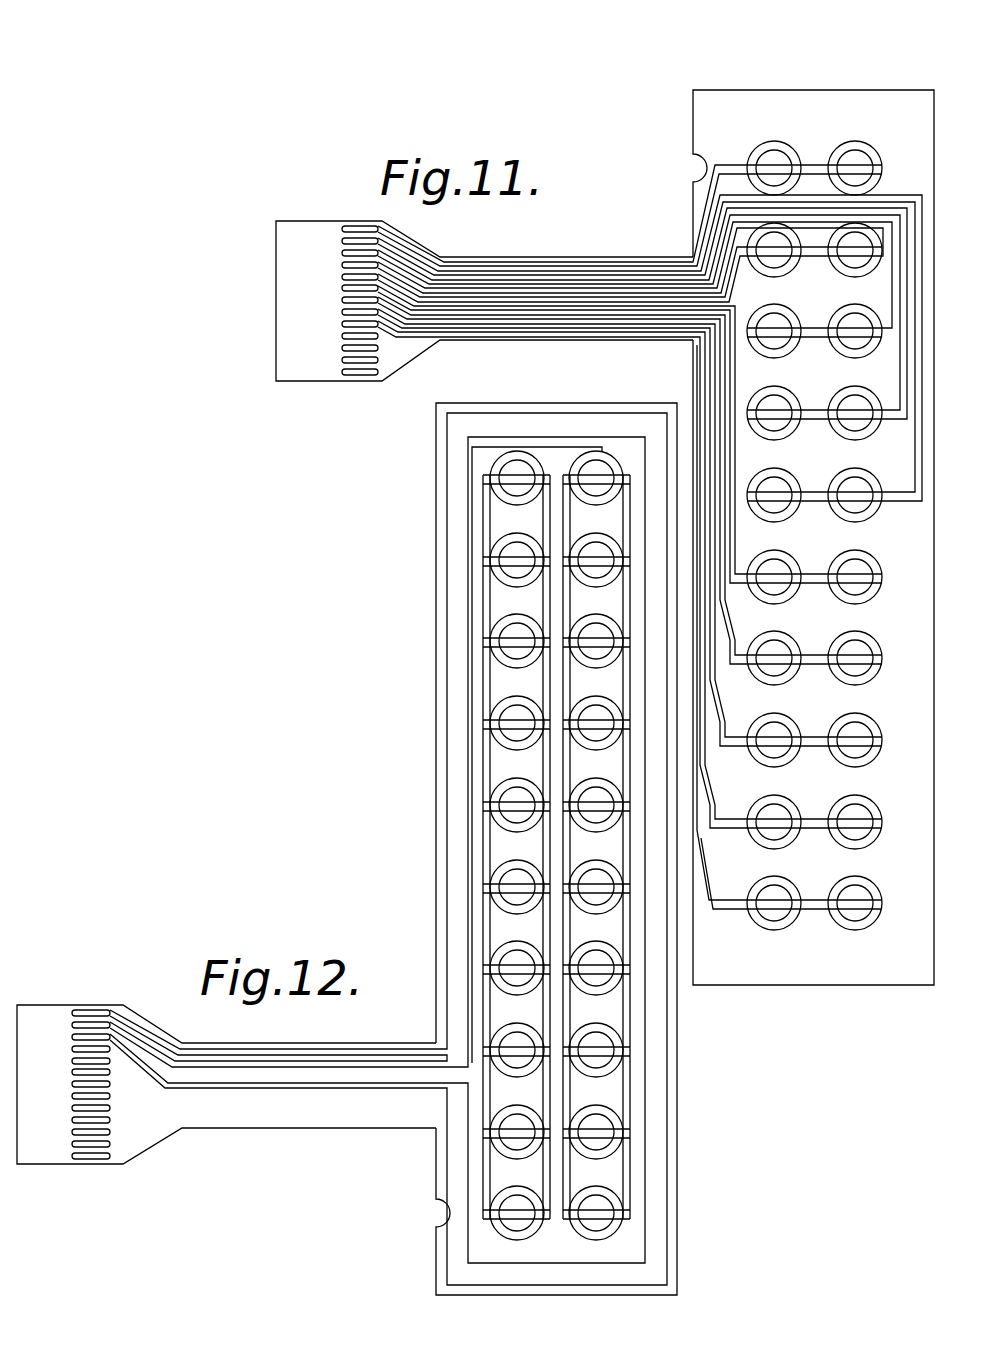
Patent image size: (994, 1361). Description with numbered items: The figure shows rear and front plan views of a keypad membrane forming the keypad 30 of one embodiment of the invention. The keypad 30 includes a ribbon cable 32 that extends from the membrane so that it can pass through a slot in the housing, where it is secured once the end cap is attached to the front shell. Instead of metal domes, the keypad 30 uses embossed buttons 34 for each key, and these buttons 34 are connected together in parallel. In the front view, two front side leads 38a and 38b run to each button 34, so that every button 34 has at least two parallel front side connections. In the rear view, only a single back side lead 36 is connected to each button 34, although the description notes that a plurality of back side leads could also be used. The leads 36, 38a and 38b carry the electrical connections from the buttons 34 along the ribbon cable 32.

In FIG. 11, the keypad 30 is at (688, 98).
In FIG. 12, the keypad 30 is at (432, 806).
In FIG. 11, the ribbon cable 32 is at (582, 252).
In FIG. 12, the ribbon cable 32 is at (212, 1037).
In FIG. 11, the button 34 is at (855, 172).
In FIG. 12, the button 34 is at (455, 565).
In FIG. 11, the back side lead 36 is at (742, 168).
In FIG. 12, the front side lead 38a is at (485, 708).
In FIG. 12, the front side lead 38b is at (548, 605).